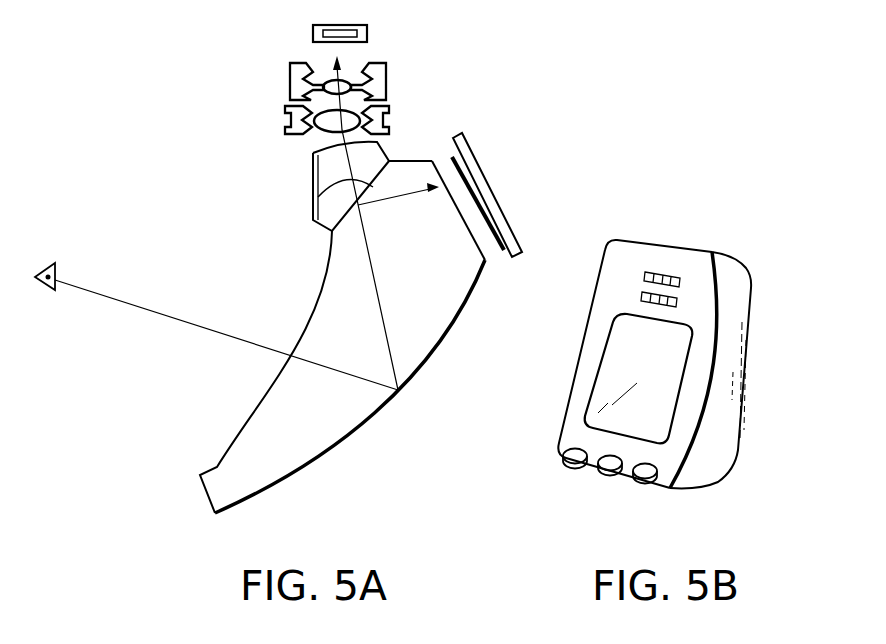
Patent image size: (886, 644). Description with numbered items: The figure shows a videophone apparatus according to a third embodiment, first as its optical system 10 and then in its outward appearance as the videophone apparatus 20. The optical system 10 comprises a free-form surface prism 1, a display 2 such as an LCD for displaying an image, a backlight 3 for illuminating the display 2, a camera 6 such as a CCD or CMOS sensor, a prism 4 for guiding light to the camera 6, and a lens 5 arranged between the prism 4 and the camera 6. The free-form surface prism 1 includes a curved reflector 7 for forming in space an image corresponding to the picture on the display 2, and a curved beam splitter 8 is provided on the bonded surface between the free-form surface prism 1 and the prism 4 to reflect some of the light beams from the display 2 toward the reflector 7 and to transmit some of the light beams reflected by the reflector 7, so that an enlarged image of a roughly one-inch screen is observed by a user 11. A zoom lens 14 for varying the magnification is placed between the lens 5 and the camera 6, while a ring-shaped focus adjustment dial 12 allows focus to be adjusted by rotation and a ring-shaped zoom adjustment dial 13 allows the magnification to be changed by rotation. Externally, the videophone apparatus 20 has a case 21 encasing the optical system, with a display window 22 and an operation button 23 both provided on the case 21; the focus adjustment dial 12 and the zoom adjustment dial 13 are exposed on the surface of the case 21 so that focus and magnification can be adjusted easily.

In FIG. 5A, the free-form surface prism 1 is at (215, 467).
In FIG. 5A, the display 2 is at (502, 253).
In FIG. 5A, the backlight 3 is at (492, 192).
In FIG. 5A, the prism 4 is at (327, 228).
In FIG. 5A, the lens 5 is at (328, 128).
In FIG. 5A, the camera 6 is at (367, 33).
In FIG. 5A, the reflector 7 is at (438, 347).
In FIG. 5A, the beam splitter 8 is at (318, 197).
In FIG. 5A, the optical system 10 is at (529, 119).
In FIG. 5A, the user 11 is at (62, 268).
In FIG. 5A, the focus adjustment dial 12 is at (388, 118).
In FIG. 5B, the focus adjustment dial 12 is at (676, 302).
In FIG. 5A, the zoom adjustment dial 13 is at (383, 81).
In FIG. 5B, the zoom adjustment dial 13 is at (645, 278).
In FIG. 5A, the zoom lens 14 is at (332, 78).
In FIG. 5B, the videophone apparatus 20 is at (732, 245).
In FIG. 5B, the case 21 is at (722, 448).
In FIG. 5B, the display window 22 is at (682, 382).
In FIG. 5B, the operation button 23 is at (565, 452).